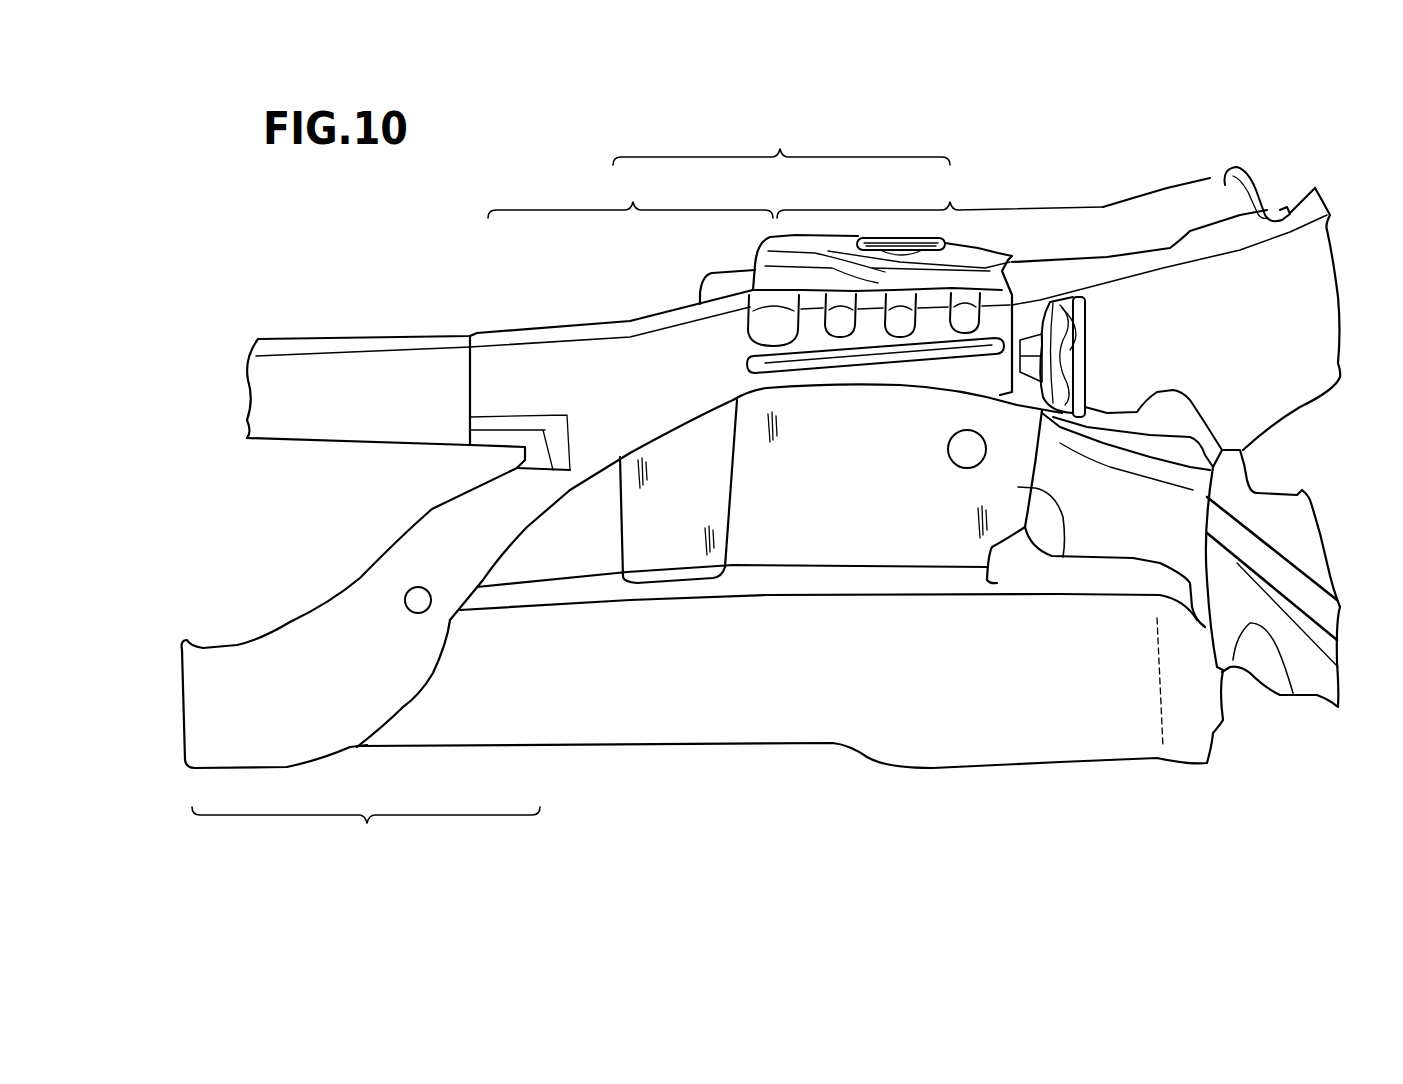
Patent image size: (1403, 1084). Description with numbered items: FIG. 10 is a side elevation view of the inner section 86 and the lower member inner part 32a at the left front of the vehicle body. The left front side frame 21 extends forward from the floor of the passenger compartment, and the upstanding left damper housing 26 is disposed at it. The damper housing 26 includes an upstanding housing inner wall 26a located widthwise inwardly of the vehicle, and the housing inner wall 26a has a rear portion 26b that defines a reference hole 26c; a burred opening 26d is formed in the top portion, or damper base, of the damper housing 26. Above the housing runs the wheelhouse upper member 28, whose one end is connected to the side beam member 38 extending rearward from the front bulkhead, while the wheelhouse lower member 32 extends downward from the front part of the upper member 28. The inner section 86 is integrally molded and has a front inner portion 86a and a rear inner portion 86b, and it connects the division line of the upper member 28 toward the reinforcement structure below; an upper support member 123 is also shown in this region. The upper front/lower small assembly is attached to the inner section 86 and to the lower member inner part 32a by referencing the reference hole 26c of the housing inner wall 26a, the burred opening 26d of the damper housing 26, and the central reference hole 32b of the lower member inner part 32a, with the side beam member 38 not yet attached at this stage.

The front side frame 21 is at (727, 758).
The damper housing 26 is at (994, 239).
The housing inner wall 26a is at (890, 540).
The rear portion 26b is at (1064, 557).
The reference hole 26c is at (961, 466).
The burred opening 26d is at (930, 240).
The wheelhouse upper member 28 is at (1108, 243).
The wheelhouse lower member 32 is at (275, 602).
The lower member inner part 32a is at (366, 804).
The central reference hole 32b is at (428, 592).
The side beam member 38 is at (337, 343).
The inner section 86 is at (807, 202).
The front inner portion 86a is at (630, 236).
The rear inner portion 86b is at (925, 271).
The upper support member 123 is at (617, 522).